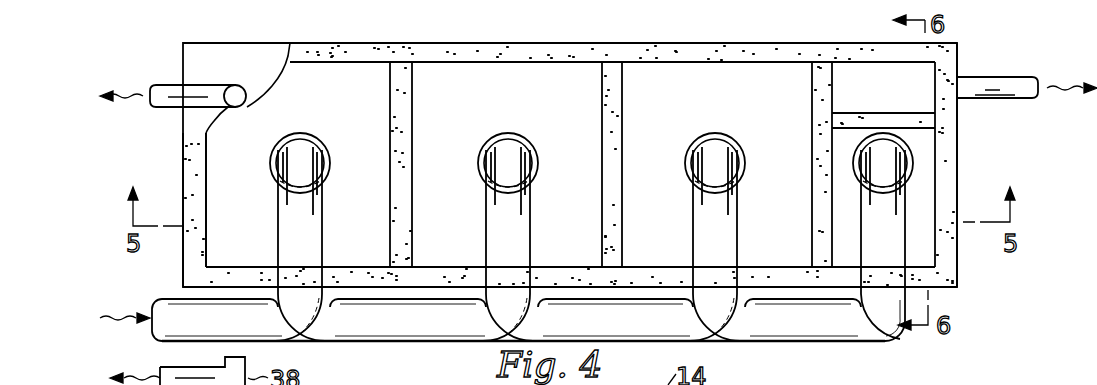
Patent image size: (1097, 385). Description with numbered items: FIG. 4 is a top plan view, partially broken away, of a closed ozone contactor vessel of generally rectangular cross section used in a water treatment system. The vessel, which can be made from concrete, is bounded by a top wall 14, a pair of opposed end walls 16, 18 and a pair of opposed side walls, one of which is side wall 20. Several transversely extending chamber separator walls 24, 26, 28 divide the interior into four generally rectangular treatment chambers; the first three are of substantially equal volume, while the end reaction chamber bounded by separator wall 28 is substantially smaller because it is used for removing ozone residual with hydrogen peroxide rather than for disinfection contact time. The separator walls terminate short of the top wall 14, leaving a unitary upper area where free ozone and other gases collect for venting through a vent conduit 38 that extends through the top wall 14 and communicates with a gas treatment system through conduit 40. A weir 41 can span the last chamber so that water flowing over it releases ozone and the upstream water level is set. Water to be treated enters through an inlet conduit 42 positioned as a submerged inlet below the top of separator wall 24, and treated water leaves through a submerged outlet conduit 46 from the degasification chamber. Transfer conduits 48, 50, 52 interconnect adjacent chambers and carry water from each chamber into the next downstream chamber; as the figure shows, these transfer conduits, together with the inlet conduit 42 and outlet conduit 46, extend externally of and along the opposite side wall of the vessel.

The top wall 14 is at (192, 53).
The end wall 16 is at (190, 176).
The end wall 18 is at (948, 66).
The side wall 20 is at (487, 50).
The chamber separator wall 24 is at (414, 92).
The chamber separator wall 26 is at (624, 88).
The chamber separator wall 28 is at (831, 86).
The vent conduit 38 is at (236, 85).
The conduit 40 is at (172, 88).
The weir 41 is at (890, 118).
The inlet conduit 42 is at (165, 300).
The outlet conduit 46 is at (994, 90).
The transfer conduit 48 is at (416, 330).
The transfer conduit 50 is at (626, 330).
The transfer conduit 52 is at (818, 330).